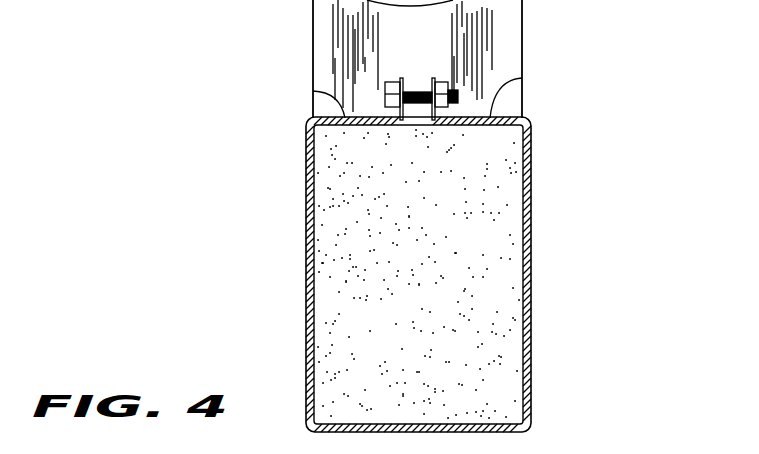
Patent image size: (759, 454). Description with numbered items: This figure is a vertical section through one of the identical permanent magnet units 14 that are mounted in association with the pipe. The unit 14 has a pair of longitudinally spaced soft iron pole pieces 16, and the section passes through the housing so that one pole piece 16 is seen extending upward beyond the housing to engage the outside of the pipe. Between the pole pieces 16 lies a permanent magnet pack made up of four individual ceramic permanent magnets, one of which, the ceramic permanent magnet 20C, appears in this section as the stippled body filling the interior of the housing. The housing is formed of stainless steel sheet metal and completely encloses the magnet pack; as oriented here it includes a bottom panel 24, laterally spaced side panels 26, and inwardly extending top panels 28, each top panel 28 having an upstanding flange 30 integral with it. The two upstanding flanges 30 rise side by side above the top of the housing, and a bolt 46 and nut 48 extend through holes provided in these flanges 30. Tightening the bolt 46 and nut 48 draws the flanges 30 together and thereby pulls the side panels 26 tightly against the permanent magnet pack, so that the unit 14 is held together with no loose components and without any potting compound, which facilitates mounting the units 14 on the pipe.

The permanent magnet unit 14 is at (540, 317).
The pole piece 16 is at (523, 37).
The ceramic permanent magnet 20C is at (503, 180).
The bottom panel 24 is at (508, 428).
The side panel 26 is at (530, 262).
The top panel 28 is at (522, 78).
The upstanding flange 30 is at (433, 78).
The bolt 46 is at (383, 92).
The nut 48 is at (442, 82).